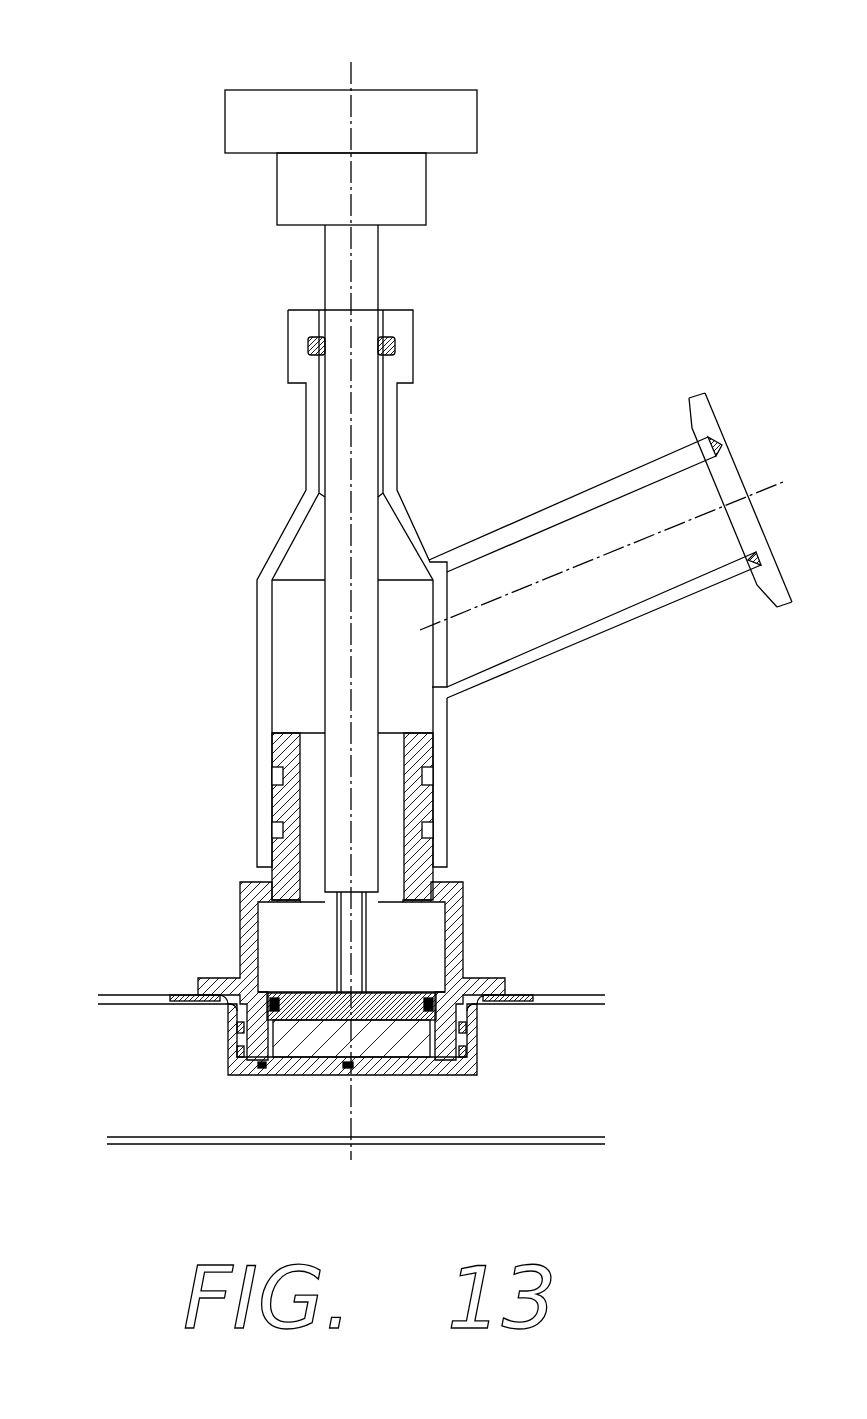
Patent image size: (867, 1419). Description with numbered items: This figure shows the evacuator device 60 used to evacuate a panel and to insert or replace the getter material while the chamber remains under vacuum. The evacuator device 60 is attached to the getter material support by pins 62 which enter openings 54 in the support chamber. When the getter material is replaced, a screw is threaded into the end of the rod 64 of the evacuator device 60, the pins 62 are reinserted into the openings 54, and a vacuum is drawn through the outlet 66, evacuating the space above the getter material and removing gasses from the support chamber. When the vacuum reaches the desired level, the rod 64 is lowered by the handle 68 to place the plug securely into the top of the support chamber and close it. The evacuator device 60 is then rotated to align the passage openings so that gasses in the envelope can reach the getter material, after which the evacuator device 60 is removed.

The openings 54 is at (473, 1017).
The evacuator device 60 is at (257, 653).
The pins 62 is at (445, 1010).
The rod 64 is at (368, 943).
The outlet 66 is at (660, 460).
The handle 68 is at (445, 117).